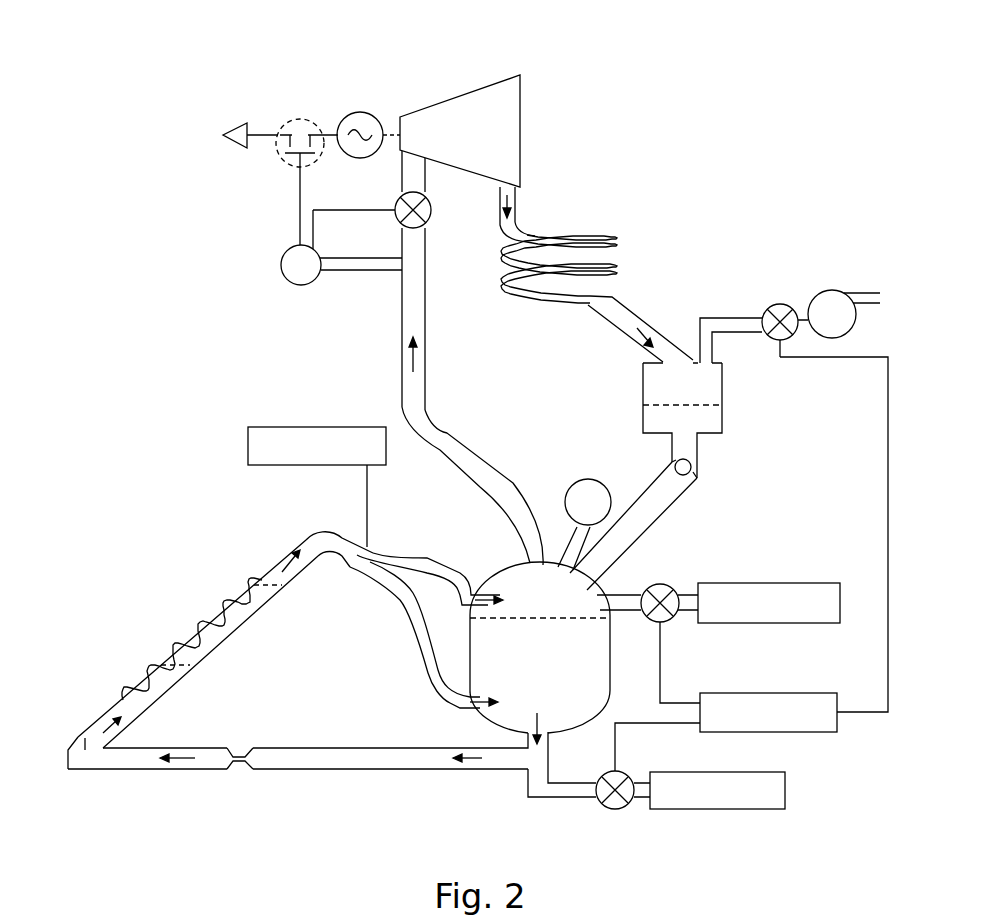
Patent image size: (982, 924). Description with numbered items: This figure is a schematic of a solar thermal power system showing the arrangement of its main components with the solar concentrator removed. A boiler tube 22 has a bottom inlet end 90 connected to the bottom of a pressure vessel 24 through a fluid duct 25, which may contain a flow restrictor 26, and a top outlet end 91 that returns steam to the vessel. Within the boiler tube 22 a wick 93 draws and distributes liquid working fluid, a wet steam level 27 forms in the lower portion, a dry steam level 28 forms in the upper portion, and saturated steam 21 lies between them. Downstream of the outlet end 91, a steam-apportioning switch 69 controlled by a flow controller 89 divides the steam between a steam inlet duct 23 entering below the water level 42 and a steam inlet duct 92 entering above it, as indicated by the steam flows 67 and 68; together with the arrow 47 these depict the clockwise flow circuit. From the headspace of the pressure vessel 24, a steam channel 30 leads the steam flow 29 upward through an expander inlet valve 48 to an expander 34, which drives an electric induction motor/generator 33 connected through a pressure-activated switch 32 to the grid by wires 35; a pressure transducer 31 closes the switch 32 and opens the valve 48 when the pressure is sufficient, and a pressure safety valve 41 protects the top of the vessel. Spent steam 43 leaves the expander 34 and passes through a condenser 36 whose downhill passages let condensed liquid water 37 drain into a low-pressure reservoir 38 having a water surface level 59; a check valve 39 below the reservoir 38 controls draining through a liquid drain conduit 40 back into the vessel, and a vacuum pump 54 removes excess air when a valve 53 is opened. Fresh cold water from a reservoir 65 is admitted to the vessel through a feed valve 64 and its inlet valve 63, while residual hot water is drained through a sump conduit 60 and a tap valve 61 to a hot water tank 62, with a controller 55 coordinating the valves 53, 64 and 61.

The saturated steam 21 is at (225, 608).
The boiler tube 22 is at (193, 637).
The steam inlet duct 23 is at (450, 710).
The pressure vessel 24 is at (582, 678).
The fluid duct 25 is at (345, 748).
The flow restrictor 26 is at (245, 748).
The wet steam level 27 is at (167, 667).
The dry steam level 28 is at (260, 582).
The steam flow 29 is at (408, 355).
The steam channel 30 is at (460, 447).
The pressure transducer 31 is at (280, 287).
The pressure-activated switch 32 is at (290, 120).
The electric induction motor/generator 33 is at (353, 110).
The expander 34 is at (474, 76).
The wires 35 is at (230, 123).
The condenser 36 is at (547, 232).
The condensed liquid water 37 is at (648, 322).
The reservoir 38 is at (723, 377).
The check valve 39 is at (688, 478).
The liquid drain conduit 40 is at (663, 513).
The pressure safety valve 41 is at (575, 480).
The water level 42 is at (533, 618).
The spent steam 43 is at (500, 200).
The flow arrow 47 is at (470, 760).
The expander inlet valve 48 is at (395, 202).
The valve 53 is at (780, 300).
The vacuum pump 54 is at (830, 300).
The controller 55 is at (818, 732).
The water surface level 59 is at (667, 402).
The sump conduit 60 is at (558, 790).
The tap valve 61 is at (615, 810).
The hot water tank 62 is at (697, 810).
The valve 63 is at (620, 595).
The feed valve 64 is at (668, 623).
The reservoir 65 is at (748, 625).
The steam flow 67 is at (482, 693).
The steam flow 68 is at (490, 587).
The steam-apportioning switch 69 is at (373, 557).
The flow controller 89 is at (303, 427).
The inlet end 90 is at (82, 735).
The outlet end 91 is at (332, 538).
The steam inlet duct 92 is at (442, 562).
The wick 93 is at (227, 632).